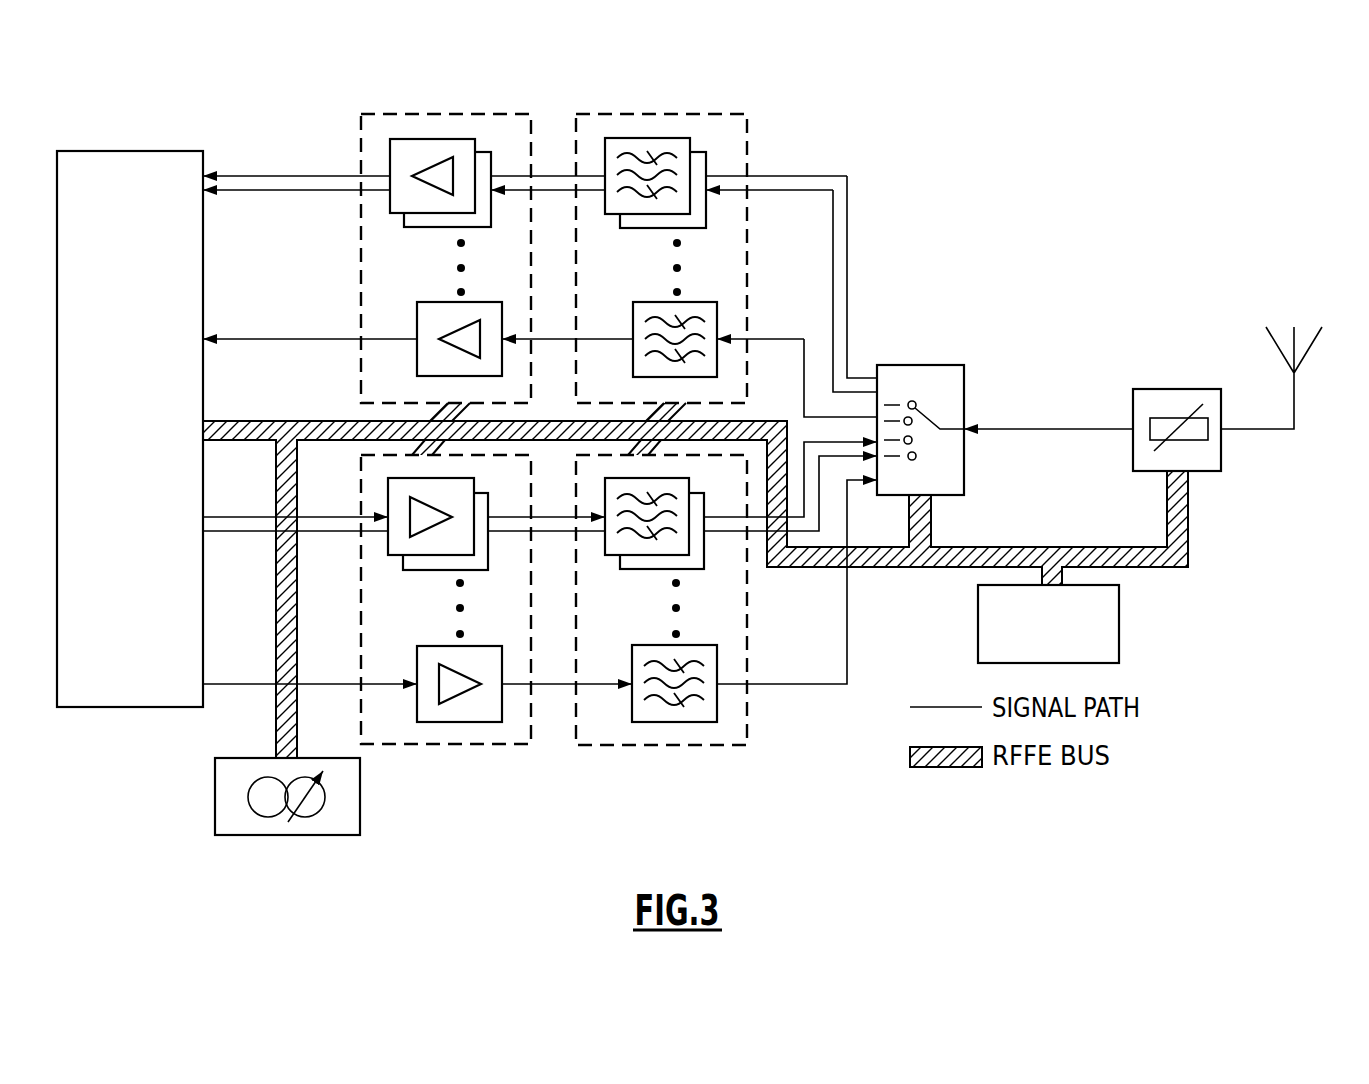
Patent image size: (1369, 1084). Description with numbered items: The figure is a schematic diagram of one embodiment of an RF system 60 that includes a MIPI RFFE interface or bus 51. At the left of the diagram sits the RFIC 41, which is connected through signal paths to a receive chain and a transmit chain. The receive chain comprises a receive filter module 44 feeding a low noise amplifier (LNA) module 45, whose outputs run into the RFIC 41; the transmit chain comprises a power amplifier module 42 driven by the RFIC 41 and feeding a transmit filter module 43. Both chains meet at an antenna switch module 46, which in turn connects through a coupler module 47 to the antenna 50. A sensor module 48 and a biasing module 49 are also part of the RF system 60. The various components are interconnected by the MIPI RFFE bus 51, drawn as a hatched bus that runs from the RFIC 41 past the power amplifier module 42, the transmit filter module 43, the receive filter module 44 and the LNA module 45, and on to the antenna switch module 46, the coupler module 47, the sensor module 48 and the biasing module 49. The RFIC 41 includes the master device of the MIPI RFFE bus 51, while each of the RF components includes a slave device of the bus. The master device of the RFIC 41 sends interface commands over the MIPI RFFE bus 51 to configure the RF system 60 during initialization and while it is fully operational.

The RFIC 41 is at (113, 151).
The power amplifier module 42 is at (470, 745).
The transmit filter module 43 is at (663, 745).
The receive filter module 44 is at (663, 114).
The low noise amplifier (LNA) module 45 is at (470, 114).
The antenna switch module 46 is at (932, 365).
The coupler module 47 is at (1173, 389).
The sensor module 48 is at (1119, 630).
The biasing module 49 is at (310, 835).
The antenna 50 is at (1305, 352).
The MIPI RFFE bus 51 is at (1190, 521).
The RF system 60 is at (1107, 134).